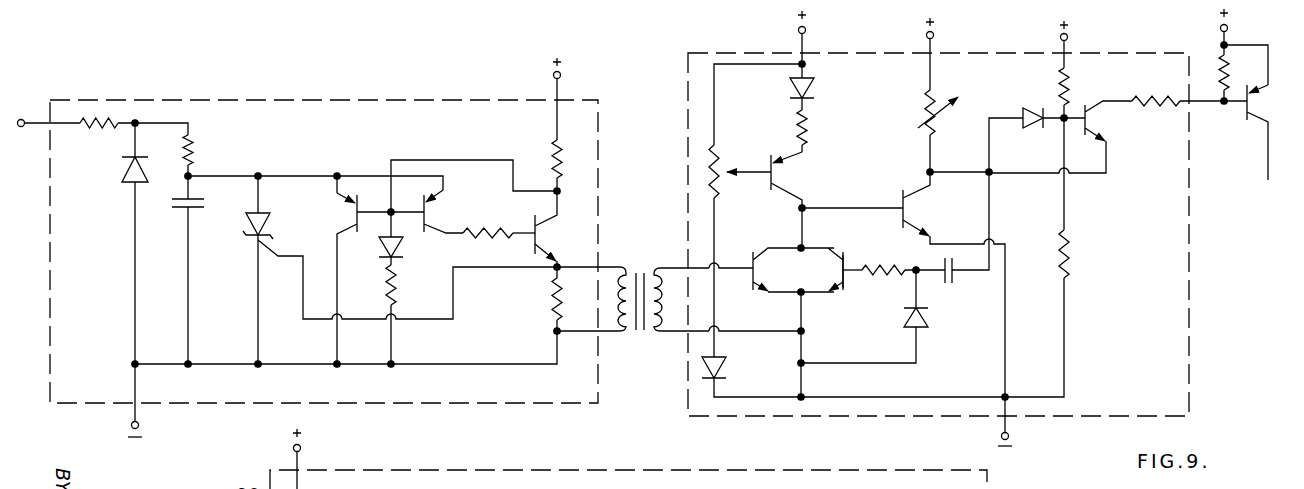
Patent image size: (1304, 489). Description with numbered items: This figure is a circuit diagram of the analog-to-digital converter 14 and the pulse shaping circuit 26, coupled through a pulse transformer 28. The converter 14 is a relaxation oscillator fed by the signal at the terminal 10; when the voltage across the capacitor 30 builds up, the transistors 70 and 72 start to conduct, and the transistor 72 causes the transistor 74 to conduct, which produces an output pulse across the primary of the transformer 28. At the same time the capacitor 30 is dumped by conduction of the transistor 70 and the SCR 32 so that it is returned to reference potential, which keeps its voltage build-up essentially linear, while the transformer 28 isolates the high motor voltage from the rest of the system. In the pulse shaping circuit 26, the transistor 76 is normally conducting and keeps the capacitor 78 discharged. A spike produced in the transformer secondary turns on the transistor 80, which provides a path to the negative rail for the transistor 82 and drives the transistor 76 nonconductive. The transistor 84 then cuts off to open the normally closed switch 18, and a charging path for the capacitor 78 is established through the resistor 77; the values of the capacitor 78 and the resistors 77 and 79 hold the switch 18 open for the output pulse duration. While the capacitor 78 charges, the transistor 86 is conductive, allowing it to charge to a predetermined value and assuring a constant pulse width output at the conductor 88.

The terminal 10 is at (24, 119).
The analog-to-digital converter 14 is at (291, 100).
The capacitor 30 is at (193, 212).
The SCR 32 is at (266, 212).
The transistor 70 is at (362, 202).
The transistor 72 is at (435, 208).
The transistor 74 is at (543, 233).
The transformer 28 is at (640, 266).
The pulse shaping circuit 26 is at (893, 419).
The transistor 82 is at (782, 172).
The resistor 77 is at (952, 95).
The transistor 76 is at (913, 210).
The transistor 80 is at (763, 269).
The transistor 86 is at (848, 257).
The resistor 79 is at (890, 276).
The capacitor 78 is at (953, 276).
The transistor 84 is at (1094, 121).
The conductor 88 is at (1207, 100).
The switch 18 is at (1237, 113).